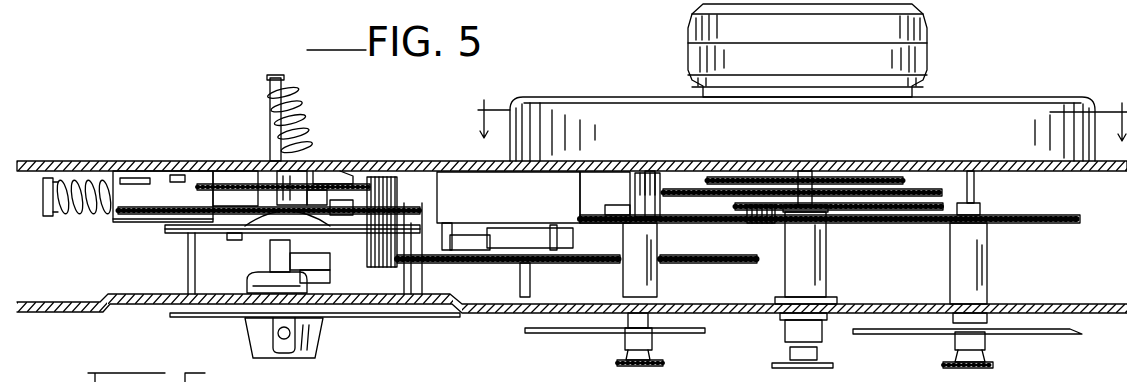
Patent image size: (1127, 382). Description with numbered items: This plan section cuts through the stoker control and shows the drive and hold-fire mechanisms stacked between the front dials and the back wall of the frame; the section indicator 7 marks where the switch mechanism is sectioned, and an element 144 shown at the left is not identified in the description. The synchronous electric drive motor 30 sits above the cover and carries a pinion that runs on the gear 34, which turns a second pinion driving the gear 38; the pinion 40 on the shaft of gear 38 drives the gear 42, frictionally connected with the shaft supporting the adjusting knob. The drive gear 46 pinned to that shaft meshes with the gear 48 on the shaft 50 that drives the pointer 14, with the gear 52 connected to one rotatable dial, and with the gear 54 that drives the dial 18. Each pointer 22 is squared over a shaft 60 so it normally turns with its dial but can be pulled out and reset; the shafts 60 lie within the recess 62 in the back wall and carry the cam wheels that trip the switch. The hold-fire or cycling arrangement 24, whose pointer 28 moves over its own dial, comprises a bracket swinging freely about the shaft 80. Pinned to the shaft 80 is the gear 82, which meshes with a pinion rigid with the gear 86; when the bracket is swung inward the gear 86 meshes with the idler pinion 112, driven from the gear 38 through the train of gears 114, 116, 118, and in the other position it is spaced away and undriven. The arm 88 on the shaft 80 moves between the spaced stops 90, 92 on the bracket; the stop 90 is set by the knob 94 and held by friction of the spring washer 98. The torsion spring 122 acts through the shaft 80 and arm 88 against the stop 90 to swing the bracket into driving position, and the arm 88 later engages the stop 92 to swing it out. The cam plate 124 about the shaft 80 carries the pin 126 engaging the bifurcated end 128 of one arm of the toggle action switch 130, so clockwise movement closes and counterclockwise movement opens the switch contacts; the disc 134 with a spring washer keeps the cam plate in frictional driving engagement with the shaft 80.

The section line 7- 7 is at (794, 120).
The pointer 14 is at (812, 365).
The dial 18 is at (556, 334).
The pointer 22 is at (625, 358).
The hold-fire or cycling arrangement 24 is at (431, 314).
The pointer 28 is at (348, 314).
The synchronous electric drive motor 30 is at (690, 38).
The gear 34 is at (892, 178).
The gear 38 is at (935, 190).
The pinion 40 is at (654, 180).
The gear 42 is at (975, 195).
The drive gear 46 is at (864, 224).
The gear 48 is at (748, 224).
The shaft 50 is at (806, 178).
The gear 52 is at (620, 218).
The gear 54 is at (1016, 223).
The shaft 60 is at (638, 178).
The recess 62 is at (1080, 100).
The shaft 80 is at (300, 114).
The gear 82 is at (178, 207).
The gear 86 is at (350, 183).
The arm 88 is at (270, 252).
The stop 90 is at (250, 288).
The stop 92 is at (312, 261).
The knob 94 is at (258, 336).
The spring washer 98 is at (312, 278).
The idler pinion 112 is at (398, 200).
The gear 114 is at (427, 264).
The gear 116 is at (538, 264).
The gear 118 is at (708, 263).
The torsion spring 122 is at (273, 90).
The cam plate 124 is at (228, 237).
The pin 126 is at (393, 246).
The bifurcated end 128 is at (488, 213).
The toggle action switch 130 is at (505, 229).
The disc 134 is at (165, 229).
The spring 144 is at (131, 186).